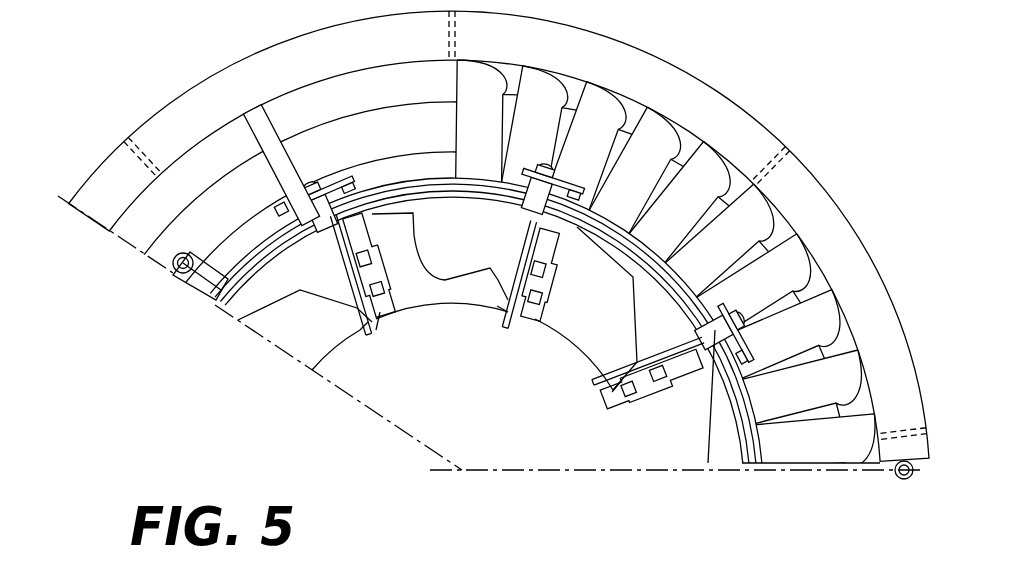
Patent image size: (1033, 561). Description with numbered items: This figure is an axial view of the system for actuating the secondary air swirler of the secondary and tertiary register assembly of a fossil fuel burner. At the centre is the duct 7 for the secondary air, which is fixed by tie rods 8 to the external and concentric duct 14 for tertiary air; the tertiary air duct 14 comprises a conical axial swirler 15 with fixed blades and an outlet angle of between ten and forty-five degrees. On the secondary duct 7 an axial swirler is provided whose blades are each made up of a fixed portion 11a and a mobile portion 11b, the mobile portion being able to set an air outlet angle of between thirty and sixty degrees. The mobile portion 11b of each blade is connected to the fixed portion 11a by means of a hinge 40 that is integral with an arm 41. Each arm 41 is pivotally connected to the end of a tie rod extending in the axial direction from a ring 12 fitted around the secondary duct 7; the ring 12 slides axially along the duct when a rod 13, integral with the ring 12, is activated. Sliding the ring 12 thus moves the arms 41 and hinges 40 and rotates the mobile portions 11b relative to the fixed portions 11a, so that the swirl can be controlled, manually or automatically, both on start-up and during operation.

The secondary air duct 7 is at (223, 306).
The tie rods 8 is at (255, 128).
The fixed portion 11a is at (378, 327).
The mobile portion 11b is at (285, 348).
The ring 12 is at (392, 183).
The rod 13 is at (180, 283).
The tertiary air duct 14 is at (127, 243).
The conical axial swirler 15 is at (749, 211).
The hinge 40 is at (378, 272).
The arm 41 is at (316, 180).